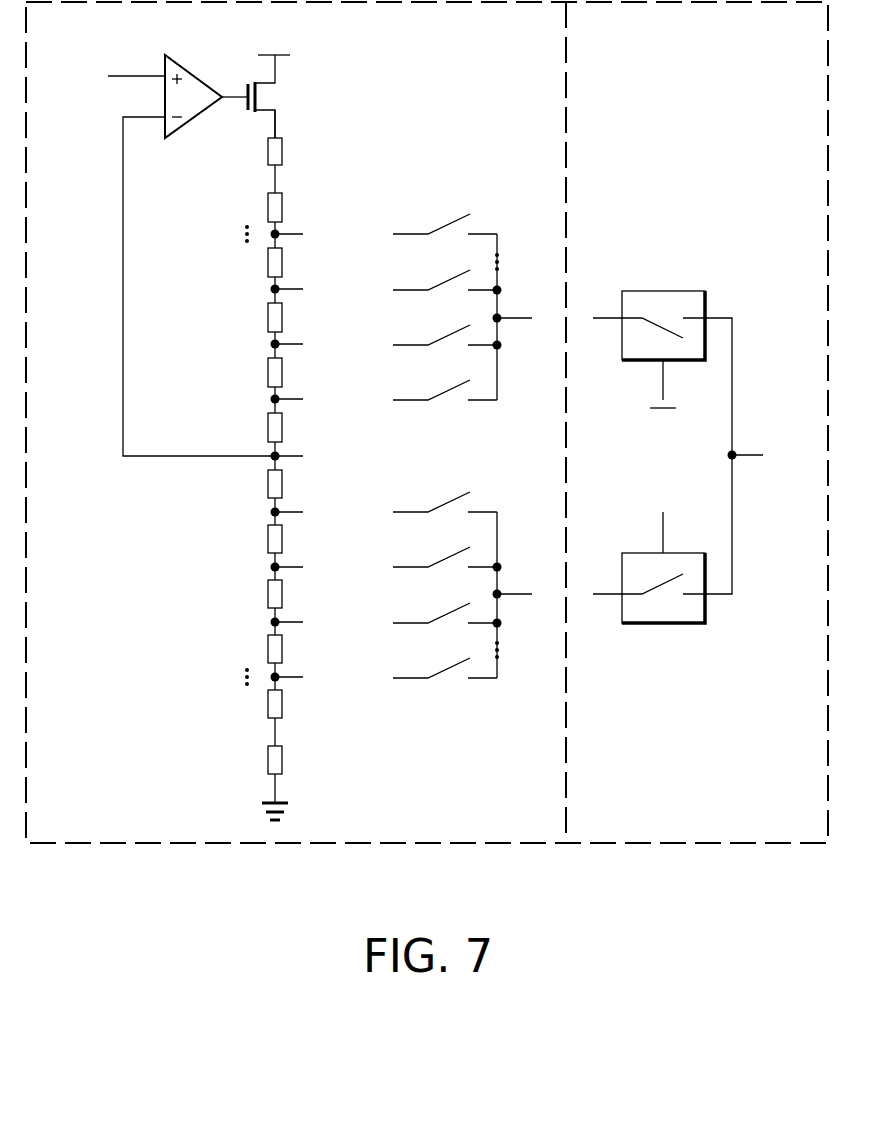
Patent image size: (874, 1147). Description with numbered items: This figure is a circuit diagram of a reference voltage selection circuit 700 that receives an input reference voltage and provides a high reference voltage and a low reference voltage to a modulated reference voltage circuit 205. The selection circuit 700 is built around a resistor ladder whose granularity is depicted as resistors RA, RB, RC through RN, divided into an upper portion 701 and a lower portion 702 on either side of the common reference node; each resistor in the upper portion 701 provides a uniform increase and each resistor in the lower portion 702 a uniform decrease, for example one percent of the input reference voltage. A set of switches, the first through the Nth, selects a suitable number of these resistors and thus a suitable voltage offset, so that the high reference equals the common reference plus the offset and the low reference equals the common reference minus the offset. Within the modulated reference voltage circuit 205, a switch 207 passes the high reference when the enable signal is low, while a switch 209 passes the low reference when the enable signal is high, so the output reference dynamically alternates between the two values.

The reference voltage selection circuit 700 is at (514, 816).
The upper portion 701 is at (219, 187).
The lower portion 702 is at (219, 782).
The modulated reference voltage circuit 205 is at (790, 816).
The switch 207 is at (677, 291).
The switch 209 is at (635, 553).